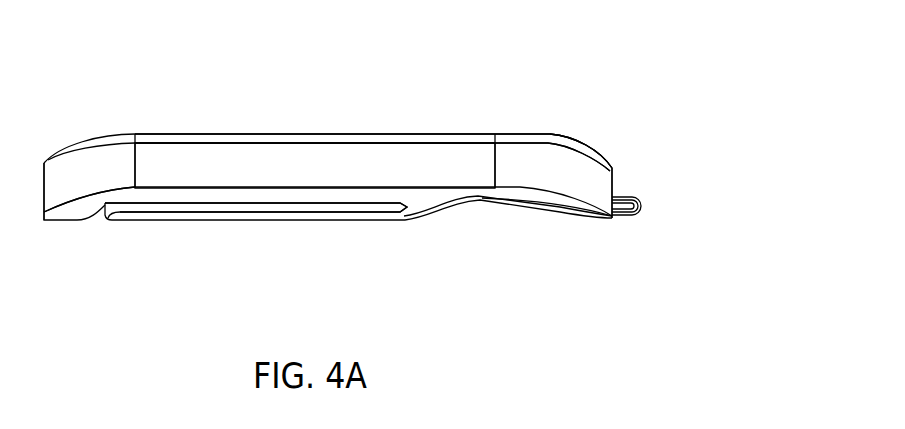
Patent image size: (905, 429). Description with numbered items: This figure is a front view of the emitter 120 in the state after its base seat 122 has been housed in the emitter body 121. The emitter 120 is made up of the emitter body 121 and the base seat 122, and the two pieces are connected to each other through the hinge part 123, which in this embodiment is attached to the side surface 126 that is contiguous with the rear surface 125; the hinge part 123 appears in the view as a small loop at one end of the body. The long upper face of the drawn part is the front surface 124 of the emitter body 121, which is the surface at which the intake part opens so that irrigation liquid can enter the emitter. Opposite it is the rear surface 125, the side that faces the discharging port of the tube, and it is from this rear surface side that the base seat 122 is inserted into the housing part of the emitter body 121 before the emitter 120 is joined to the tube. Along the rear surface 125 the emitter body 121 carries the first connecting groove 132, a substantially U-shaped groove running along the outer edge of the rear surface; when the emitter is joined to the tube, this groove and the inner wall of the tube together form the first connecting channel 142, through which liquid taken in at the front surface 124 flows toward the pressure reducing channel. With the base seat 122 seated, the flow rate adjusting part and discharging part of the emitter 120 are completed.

The emitter 120 is at (635, 75).
The emitter body 121 is at (408, 167).
The base seat 122 is at (480, 207).
The hinge part 123 is at (642, 215).
The front surface 124 is at (229, 134).
The rear surface 125 is at (60, 221).
The side surface 126 is at (617, 173).
The first connecting groove 132 is at (205, 207).
The first connecting channel 142 is at (256, 207).